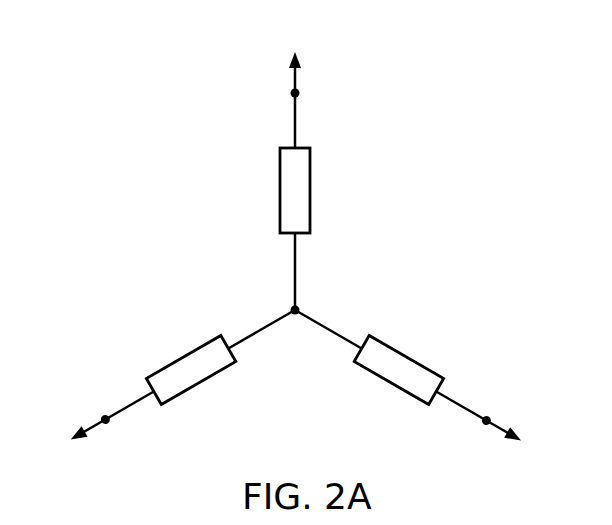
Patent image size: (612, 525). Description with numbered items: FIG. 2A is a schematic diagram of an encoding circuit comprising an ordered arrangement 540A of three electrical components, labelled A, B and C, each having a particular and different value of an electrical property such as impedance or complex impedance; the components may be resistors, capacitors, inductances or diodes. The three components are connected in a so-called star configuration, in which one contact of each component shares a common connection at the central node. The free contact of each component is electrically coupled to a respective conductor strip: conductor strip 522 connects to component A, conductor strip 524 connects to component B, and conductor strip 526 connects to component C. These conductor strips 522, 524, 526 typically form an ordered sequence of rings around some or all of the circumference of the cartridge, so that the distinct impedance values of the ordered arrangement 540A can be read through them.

The ordered arrangement 540A is at (132, 117).
The conductor strip 522 is at (296, 167).
The conductor strip 524 is at (429, 379).
The conductor strip 526 is at (160, 377).